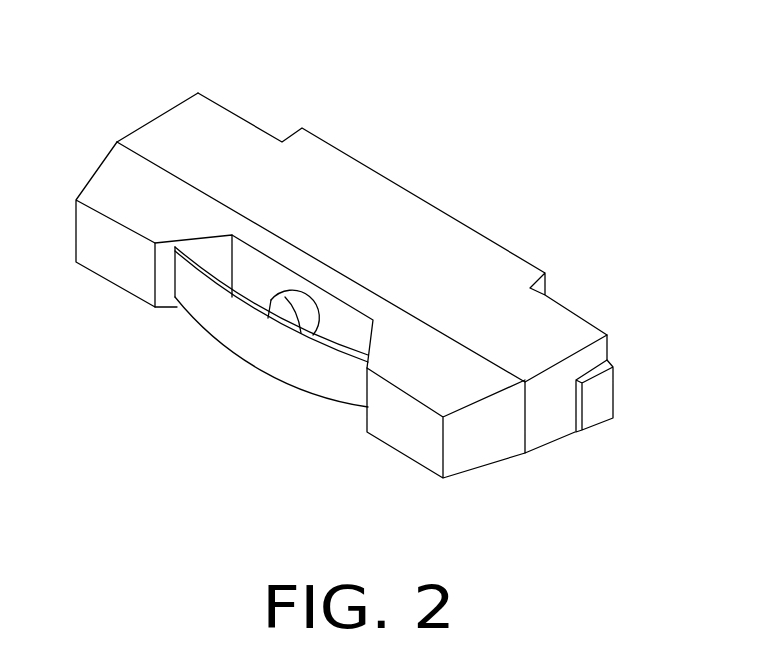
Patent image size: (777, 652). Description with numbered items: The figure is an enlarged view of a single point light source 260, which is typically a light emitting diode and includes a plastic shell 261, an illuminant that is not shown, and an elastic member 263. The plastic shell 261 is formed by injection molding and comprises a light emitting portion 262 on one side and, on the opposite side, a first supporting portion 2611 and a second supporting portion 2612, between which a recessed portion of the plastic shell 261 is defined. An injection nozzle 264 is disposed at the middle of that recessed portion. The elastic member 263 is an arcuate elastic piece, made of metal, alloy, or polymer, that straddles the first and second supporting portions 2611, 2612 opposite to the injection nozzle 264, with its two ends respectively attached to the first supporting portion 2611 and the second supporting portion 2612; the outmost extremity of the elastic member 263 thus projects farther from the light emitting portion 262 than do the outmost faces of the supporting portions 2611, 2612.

The point light source 260 is at (364, 45).
The plastic shell 261 is at (542, 322).
The light emitting portion 262 is at (436, 204).
The first supporting portion 2611 is at (122, 267).
The second supporting portion 2612 is at (408, 442).
The elastic member 263 is at (272, 348).
The injection nozzle 264 is at (283, 311).